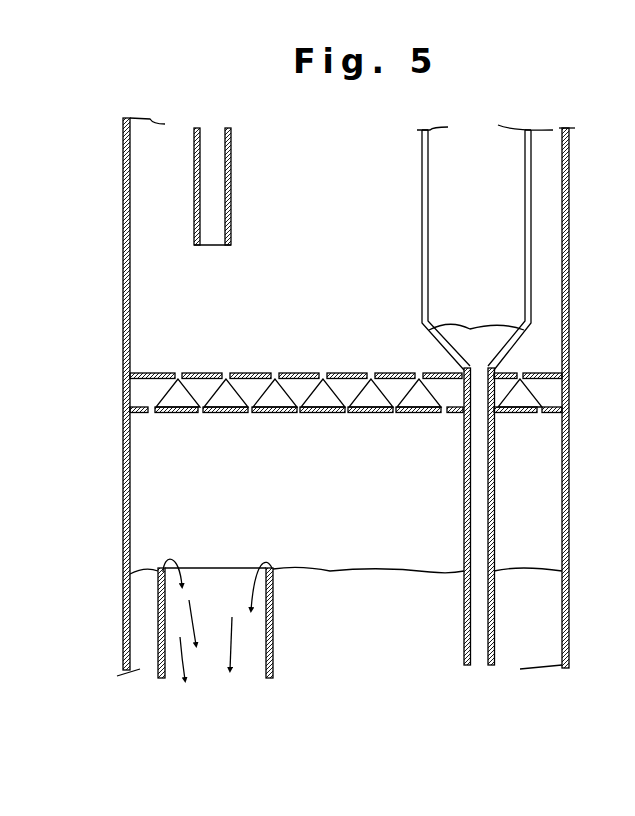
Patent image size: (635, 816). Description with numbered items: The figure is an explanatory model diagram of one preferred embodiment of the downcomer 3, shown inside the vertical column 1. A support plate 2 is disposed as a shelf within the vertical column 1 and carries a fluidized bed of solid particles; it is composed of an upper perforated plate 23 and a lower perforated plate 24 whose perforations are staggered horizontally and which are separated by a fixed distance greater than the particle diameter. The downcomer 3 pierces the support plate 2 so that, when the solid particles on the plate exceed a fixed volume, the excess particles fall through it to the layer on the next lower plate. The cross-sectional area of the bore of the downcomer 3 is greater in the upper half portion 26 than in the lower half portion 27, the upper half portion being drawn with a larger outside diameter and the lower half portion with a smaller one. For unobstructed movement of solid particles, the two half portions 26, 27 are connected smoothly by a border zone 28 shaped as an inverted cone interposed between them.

The vertical column 1 is at (124, 235).
The support plate 2 is at (382, 404).
The downcomer 3 is at (158, 596).
The upper perforated plate 23 is at (552, 378).
The lower perforated plate 24 is at (552, 410).
The upper half portion 26 is at (435, 232).
The lower half portion 27 is at (218, 149).
The border zone 28 is at (518, 328).